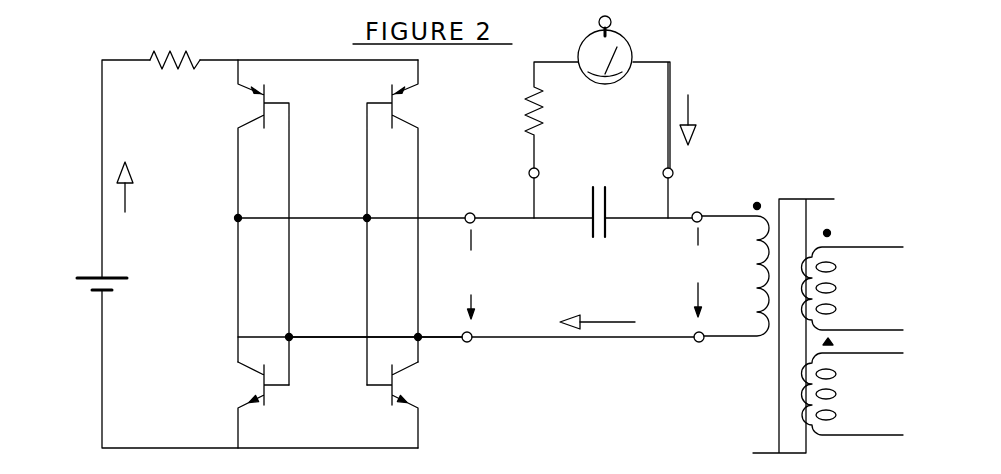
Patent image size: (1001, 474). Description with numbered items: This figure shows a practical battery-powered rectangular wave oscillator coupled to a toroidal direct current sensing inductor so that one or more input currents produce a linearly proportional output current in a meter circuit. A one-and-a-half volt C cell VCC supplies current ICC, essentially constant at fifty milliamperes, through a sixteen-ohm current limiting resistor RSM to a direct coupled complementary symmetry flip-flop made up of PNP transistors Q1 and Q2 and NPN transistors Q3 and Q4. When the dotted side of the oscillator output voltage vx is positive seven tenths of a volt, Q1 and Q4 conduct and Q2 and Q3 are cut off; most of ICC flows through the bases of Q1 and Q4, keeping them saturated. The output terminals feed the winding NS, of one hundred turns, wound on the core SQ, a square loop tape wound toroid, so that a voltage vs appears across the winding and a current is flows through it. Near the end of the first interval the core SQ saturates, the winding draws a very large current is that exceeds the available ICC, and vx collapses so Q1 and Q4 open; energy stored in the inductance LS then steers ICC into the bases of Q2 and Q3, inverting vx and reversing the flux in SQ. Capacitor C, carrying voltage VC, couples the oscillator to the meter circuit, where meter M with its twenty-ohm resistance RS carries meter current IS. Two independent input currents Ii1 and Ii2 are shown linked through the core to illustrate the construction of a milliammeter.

The current limiting resistor RSM is at (153, 46).
The PNP silicon transistor Q1 is at (247, 222).
The PNP silicon transistor Q2 is at (404, 222).
The NPN silicon transistor Q3 is at (249, 405).
The NPN silicon transistor Q4 is at (401, 405).
The C cell VCC is at (88, 277).
The supply current ICC is at (132, 208).
The rectangular wave oscillator output voltage vx is at (472, 274).
The capacitor C is at (584, 211).
The capacitor voltage VC is at (641, 165).
The meter resistance RS is at (536, 115).
The meter M is at (606, 69).
The meter current IS is at (668, 115).
The winding voltage vs is at (696, 272).
The winding current is is at (609, 320).
The inductance LS is at (735, 259).
The winding NS is at (730, 319).
The core SQ is at (793, 310).
The first input current Ii1 is at (882, 263).
The second input current Ii2 is at (883, 363).